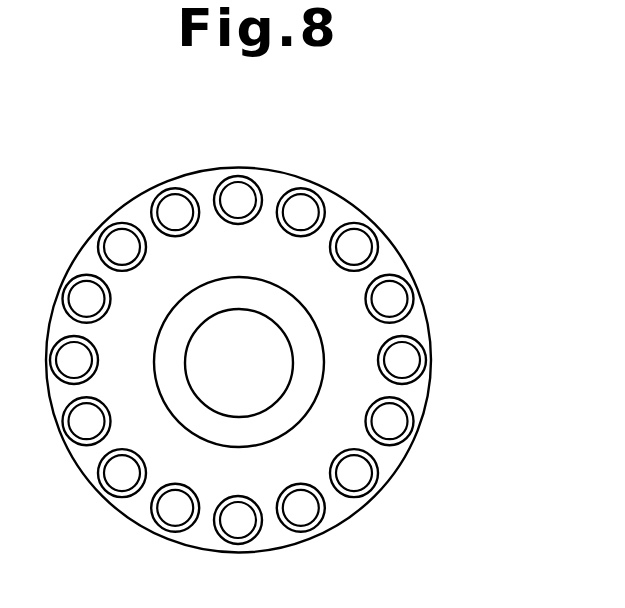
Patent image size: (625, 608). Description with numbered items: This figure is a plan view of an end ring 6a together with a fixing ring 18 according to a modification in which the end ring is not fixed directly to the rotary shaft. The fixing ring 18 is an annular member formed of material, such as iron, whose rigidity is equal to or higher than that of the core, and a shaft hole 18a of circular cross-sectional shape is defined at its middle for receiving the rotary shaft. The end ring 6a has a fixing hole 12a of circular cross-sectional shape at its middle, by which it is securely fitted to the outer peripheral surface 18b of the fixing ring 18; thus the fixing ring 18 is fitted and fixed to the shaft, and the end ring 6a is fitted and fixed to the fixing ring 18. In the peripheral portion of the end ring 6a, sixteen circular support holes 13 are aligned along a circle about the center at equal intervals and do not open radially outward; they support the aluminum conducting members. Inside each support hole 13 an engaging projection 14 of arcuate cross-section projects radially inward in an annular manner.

The end ring 6a is at (286, 181).
The fixing hole 12a is at (223, 357).
The support hole 13 is at (230, 210).
The engaging projection 14 is at (178, 232).
The fixing ring 18 is at (241, 357).
The shaft hole 18a is at (215, 318).
The outer peripheral surface 18b is at (240, 277).